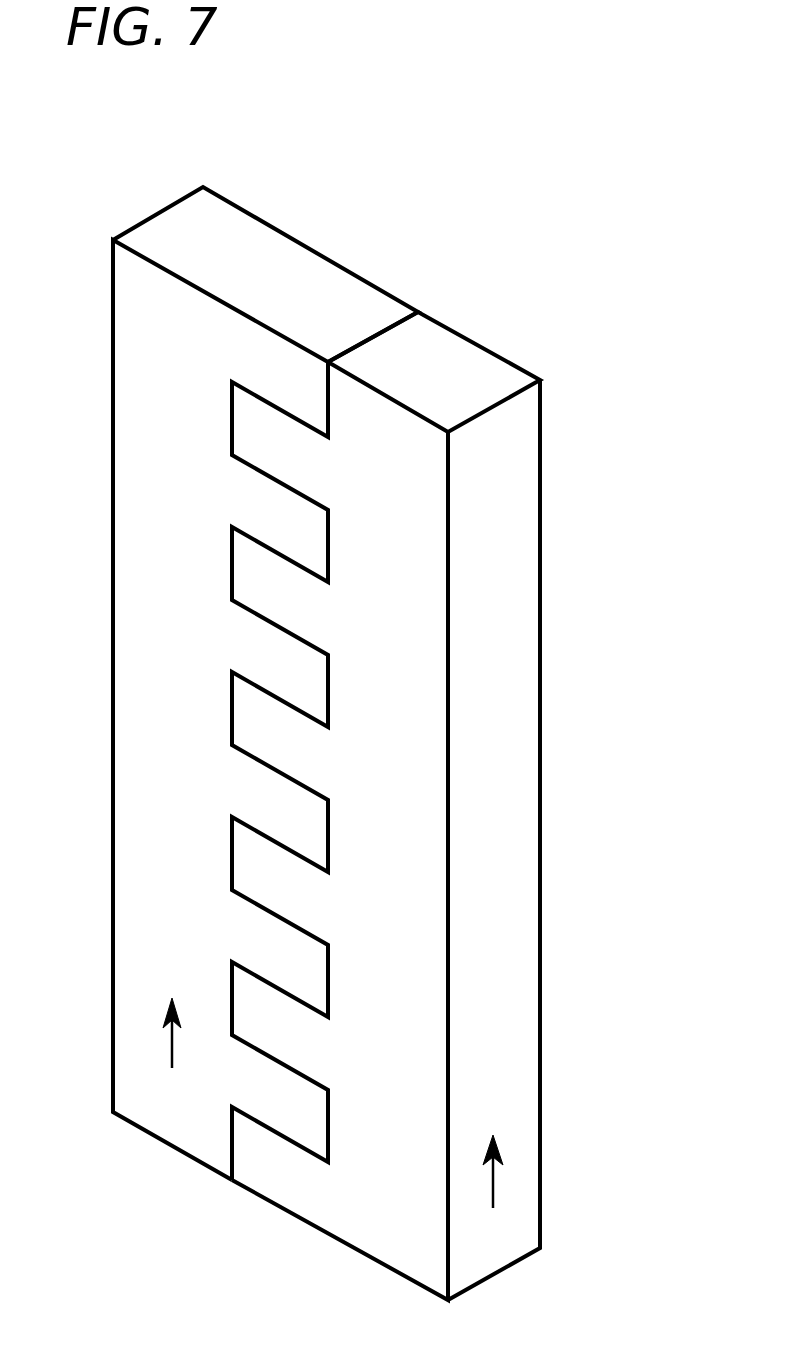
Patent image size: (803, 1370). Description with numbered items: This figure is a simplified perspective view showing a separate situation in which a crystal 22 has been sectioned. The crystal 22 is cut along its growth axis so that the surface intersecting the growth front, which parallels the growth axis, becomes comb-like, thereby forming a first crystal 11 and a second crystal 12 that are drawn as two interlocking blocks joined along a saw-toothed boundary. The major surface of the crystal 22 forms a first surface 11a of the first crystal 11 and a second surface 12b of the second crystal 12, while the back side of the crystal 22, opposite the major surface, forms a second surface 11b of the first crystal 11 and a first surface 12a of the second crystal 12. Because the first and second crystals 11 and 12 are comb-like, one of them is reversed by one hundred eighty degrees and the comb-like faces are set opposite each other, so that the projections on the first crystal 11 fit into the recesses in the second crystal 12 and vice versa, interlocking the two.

The crystal 22 is at (599, 357).
The first crystal 11 is at (442, 373).
The first surface of the first crystal 11a is at (385, 614).
The second surface of the first crystal 11b is at (505, 360).
The second crystal 12 is at (332, 303).
The first surface of the second crystal 12a is at (160, 411).
The second surface of the second crystal 12b is at (257, 217).